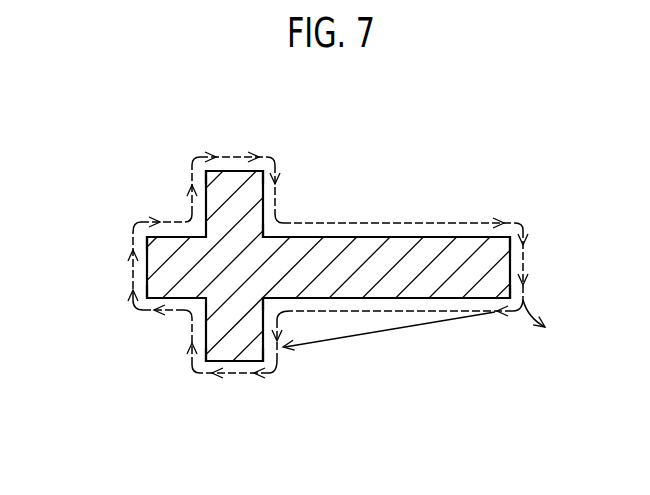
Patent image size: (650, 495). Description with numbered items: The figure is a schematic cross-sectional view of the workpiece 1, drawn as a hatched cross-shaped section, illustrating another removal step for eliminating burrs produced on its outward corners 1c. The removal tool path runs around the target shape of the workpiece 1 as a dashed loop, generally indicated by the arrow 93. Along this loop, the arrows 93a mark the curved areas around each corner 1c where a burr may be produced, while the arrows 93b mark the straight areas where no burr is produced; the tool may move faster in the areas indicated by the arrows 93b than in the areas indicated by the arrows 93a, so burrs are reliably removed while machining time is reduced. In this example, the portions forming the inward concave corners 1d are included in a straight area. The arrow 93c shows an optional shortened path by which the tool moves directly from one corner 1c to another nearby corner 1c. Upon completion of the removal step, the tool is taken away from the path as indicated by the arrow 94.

The workpiece 1 is at (360, 255).
The corner 1c is at (262, 171).
The inward concave corner 1d is at (268, 236).
The arrow 93 is at (525, 262).
The arrows 93a is at (196, 157).
The arrows 93b is at (233, 156).
The arrow 93c is at (442, 323).
The arrow 94 is at (528, 300).